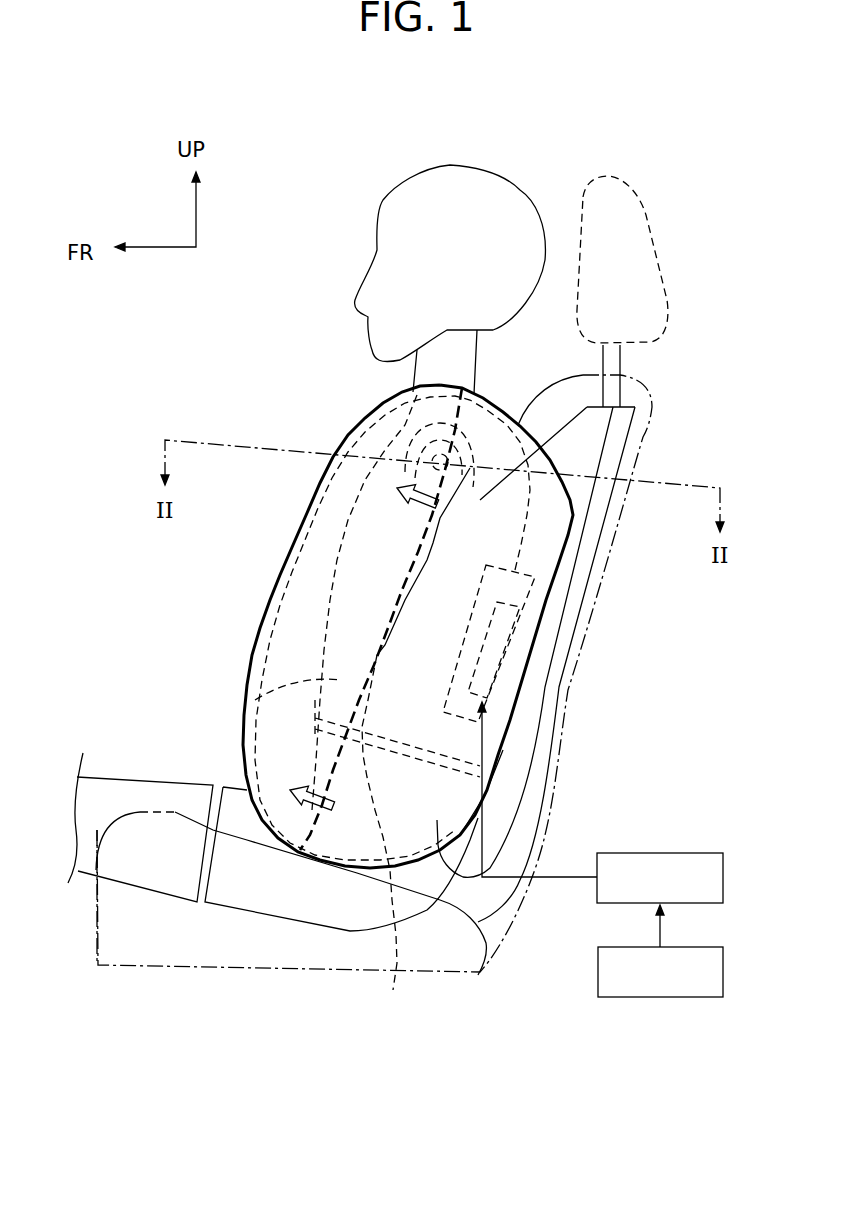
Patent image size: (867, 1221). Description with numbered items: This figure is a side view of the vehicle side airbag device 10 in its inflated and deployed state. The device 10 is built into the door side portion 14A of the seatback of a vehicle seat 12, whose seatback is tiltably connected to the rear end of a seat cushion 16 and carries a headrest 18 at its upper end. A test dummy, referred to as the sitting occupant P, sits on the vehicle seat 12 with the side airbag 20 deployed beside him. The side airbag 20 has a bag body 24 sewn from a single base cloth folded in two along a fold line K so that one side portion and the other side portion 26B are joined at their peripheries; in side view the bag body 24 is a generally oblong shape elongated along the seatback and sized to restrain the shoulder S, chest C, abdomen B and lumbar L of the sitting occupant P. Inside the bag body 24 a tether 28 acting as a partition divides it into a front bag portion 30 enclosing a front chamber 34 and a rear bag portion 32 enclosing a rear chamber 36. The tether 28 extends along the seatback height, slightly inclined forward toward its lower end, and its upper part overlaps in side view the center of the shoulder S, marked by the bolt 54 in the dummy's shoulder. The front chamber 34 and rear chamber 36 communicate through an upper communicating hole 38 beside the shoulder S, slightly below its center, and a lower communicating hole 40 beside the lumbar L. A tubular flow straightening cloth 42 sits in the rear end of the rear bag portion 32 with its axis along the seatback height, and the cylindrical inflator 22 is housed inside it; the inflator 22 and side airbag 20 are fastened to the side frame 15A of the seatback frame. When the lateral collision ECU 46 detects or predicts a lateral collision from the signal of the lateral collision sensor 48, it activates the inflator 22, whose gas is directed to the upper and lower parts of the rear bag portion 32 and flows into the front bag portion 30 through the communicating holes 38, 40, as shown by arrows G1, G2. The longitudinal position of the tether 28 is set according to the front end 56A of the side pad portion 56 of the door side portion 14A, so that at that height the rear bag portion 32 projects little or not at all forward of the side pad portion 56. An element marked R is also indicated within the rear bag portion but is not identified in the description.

The vehicle side airbag device 10 is at (284, 436).
The vehicle seat 12 is at (316, 984).
The door side portion 14A is at (640, 447).
The side frame 15A is at (540, 700).
The seat cushion 16 is at (228, 968).
The headrest 18 is at (650, 210).
The side airbag 20 is at (379, 405).
The inflator 22 is at (517, 630).
The bag body 24 is at (350, 437).
The other side portion 26B is at (341, 859).
The tether 28 is at (400, 565).
The front bag portion 30 is at (275, 635).
The rear bag portion 32 is at (503, 507).
The front chamber 34 is at (270, 665).
The rear chamber 36 is at (525, 528).
The upper communicating hole 38 is at (412, 520).
The lower communicating hole 40 is at (322, 815).
The flow straightening cloth 42 is at (530, 595).
The lateral collision ECU 46 is at (597, 895).
The lateral collision sensor 48 is at (598, 985).
The bolt 54 is at (470, 468).
The side pad portion 56 is at (431, 552).
The front end 56A is at (378, 655).
The sitting occupant P is at (388, 199).
The shoulder S is at (450, 453).
The chest C is at (340, 550).
The abdomen B is at (267, 683).
The rear region R is at (490, 543).
The fold line K is at (503, 750).
The lumbar L is at (380, 838).
The arrow G1 is at (397, 495).
The arrow G2 is at (298, 785).